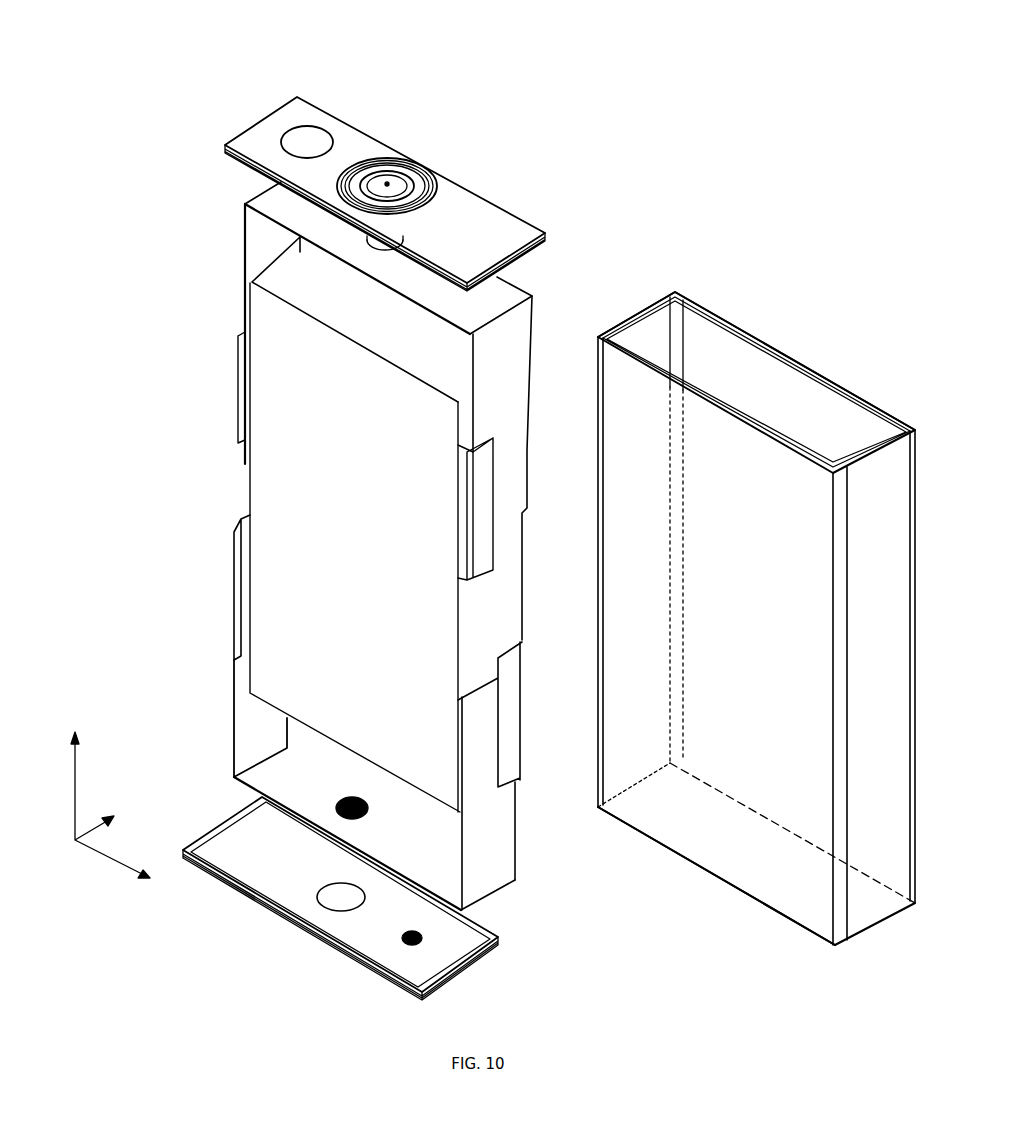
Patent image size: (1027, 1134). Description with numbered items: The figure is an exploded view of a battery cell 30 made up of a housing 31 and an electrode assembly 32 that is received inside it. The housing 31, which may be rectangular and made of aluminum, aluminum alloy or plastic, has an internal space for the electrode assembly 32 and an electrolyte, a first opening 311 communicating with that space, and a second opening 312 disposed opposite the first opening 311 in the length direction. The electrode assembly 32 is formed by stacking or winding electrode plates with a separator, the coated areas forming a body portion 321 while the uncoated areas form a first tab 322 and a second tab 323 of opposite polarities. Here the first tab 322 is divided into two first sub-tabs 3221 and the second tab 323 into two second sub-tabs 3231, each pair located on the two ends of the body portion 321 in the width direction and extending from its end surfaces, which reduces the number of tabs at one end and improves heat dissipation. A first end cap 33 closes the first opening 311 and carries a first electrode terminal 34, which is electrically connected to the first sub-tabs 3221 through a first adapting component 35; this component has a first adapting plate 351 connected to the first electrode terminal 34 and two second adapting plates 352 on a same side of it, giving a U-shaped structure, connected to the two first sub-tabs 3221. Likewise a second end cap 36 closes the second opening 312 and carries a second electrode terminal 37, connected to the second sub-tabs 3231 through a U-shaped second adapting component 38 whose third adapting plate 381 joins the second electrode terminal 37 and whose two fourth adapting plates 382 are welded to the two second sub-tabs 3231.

The battery cell 30 is at (834, 29).
The housing 31 is at (636, 655).
The first opening 311 is at (739, 853).
The second opening 312 is at (771, 388).
The electrode assembly 32 is at (78, 440).
The body portion 321 is at (330, 545).
The first tab 322 is at (128, 573).
The first sub-tab 3221 is at (238, 557).
The second tab 323 is at (128, 400).
The second sub-tab 3231 is at (240, 380).
The first end cap 33 is at (272, 868).
The first electrode terminal 34 is at (340, 902).
The first adapting component 35 is at (572, 822).
The first adapting plate 351 is at (425, 865).
The second adapting plate 352 is at (256, 733).
The second end cap 36 is at (338, 126).
The second electrode terminal 37 is at (390, 178).
The second adapting component 38 is at (620, 171).
The third adapting plate 381 is at (482, 298).
The fourth adapting plate 382 is at (262, 243).